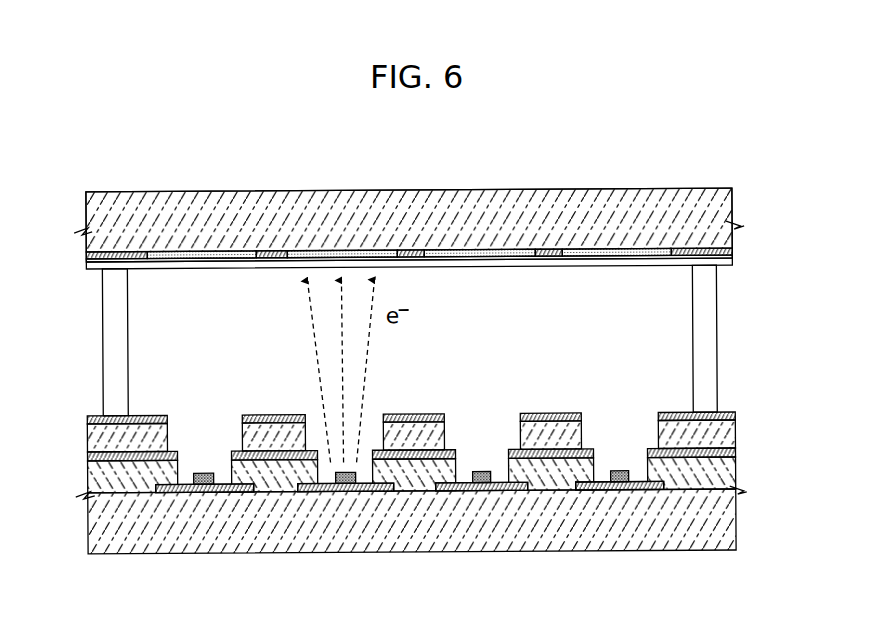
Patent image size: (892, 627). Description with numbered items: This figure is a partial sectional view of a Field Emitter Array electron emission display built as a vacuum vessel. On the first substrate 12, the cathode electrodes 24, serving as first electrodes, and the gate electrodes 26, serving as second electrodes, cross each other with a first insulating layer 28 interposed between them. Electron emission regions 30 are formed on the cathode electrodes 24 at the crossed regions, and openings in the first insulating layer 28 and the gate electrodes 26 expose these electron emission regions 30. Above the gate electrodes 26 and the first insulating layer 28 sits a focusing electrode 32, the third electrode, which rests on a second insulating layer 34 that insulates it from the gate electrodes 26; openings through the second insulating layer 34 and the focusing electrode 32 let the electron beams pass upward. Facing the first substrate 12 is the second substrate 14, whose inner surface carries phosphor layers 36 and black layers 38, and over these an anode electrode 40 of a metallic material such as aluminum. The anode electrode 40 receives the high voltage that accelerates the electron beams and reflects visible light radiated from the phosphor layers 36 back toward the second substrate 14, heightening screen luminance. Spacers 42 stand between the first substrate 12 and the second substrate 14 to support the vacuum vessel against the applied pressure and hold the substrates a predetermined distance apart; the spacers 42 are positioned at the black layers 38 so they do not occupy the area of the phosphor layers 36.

The first substrate 12 is at (268, 552).
The second substrate 14 is at (190, 200).
The cathode electrodes 24 is at (383, 491).
The gate electrodes 26 is at (89, 457).
The first insulating layer 28 is at (735, 468).
The electron emission regions 30 is at (345, 483).
The focusing electrode 32 is at (729, 414).
The second insulating layer 34 is at (735, 431).
The phosphor layers 36 is at (341, 254).
The black layers 38 is at (414, 255).
The anode electrode 40 is at (478, 261).
The spacers 42 is at (103, 345).